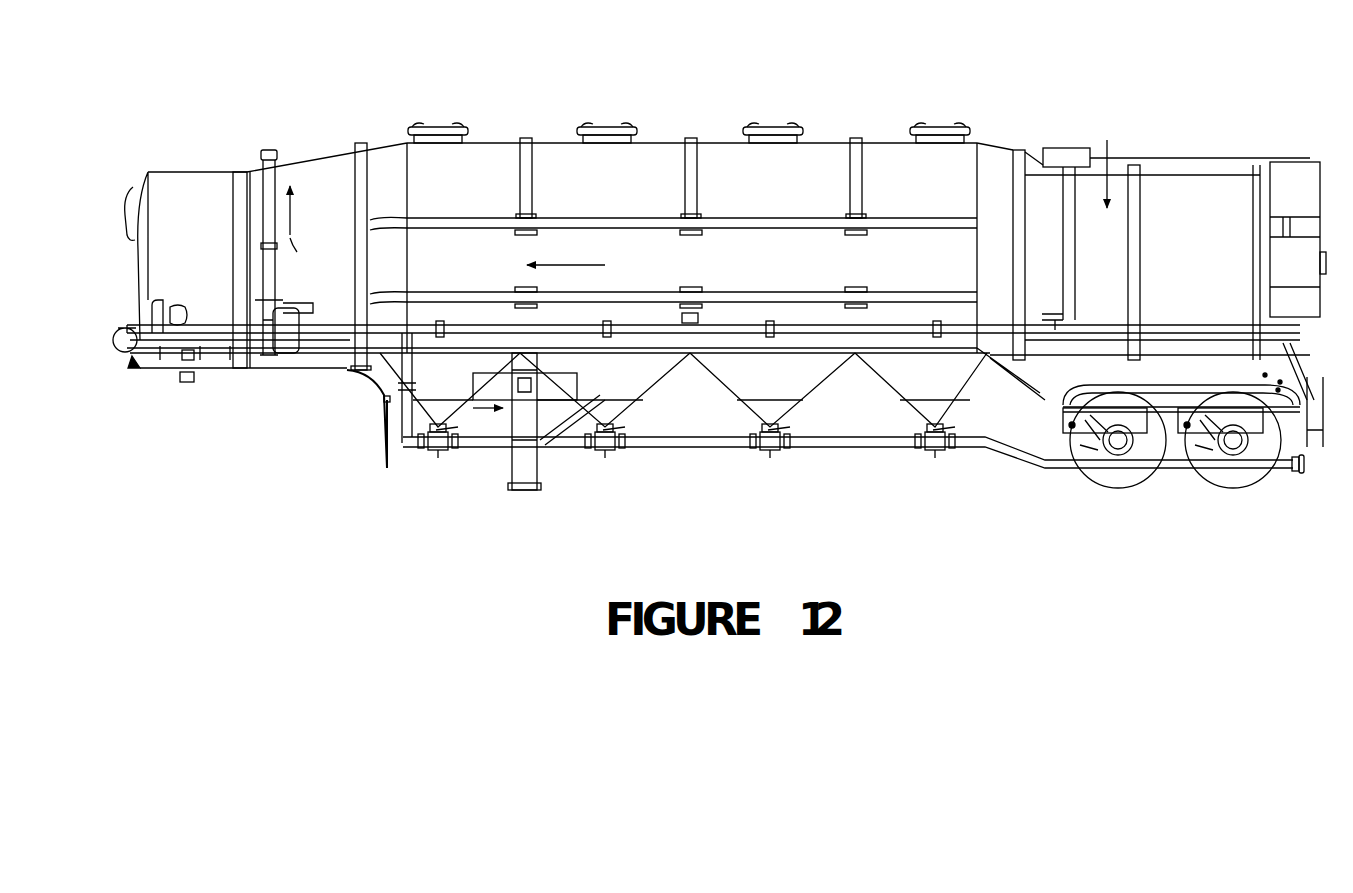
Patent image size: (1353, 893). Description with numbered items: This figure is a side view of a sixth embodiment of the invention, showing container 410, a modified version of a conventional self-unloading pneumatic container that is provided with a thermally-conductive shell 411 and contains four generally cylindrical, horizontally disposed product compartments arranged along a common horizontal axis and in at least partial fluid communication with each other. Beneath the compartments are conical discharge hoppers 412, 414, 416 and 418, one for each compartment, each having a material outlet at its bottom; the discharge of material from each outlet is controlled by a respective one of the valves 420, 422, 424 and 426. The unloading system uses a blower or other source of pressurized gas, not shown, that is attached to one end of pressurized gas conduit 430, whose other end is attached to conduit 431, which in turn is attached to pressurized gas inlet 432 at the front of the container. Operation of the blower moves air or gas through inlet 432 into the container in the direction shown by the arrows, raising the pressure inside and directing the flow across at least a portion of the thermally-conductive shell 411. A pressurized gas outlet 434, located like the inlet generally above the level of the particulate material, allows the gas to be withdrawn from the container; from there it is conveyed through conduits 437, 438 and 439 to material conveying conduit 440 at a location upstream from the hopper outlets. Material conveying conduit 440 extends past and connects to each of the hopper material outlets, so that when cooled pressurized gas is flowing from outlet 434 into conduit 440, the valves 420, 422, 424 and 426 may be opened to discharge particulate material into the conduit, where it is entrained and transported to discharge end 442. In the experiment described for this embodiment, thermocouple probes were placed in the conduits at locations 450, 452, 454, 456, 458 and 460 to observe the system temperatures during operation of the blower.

The container 410 is at (650, 158).
The thermally-conductive shell 411 is at (824, 138).
The conical discharge hopper 412 is at (466, 381).
The conical discharge hopper 414 is at (645, 381).
The conical discharge hopper 416 is at (789, 381).
The conical discharge hopper 418 is at (952, 381).
The valve 420 is at (432, 449).
The valve 422 is at (600, 449).
The valve 424 is at (768, 449).
The valve 426 is at (935, 449).
The pressurized gas conduit 430 is at (168, 353).
The conduit 431 is at (271, 267).
The pressurized gas inlet 432 is at (284, 143).
The pressurized gas outlet 434 is at (1080, 146).
The conduit 437 is at (1068, 258).
The conduit 438 is at (580, 328).
The conduit 439 is at (400, 420).
The material conveying conduit 440 is at (683, 447).
The discharge end 442 is at (1307, 472).
The thermocouple probe location 450 is at (132, 370).
The thermocouple probe location 452 is at (268, 146).
The thermocouple probe location 454 is at (1048, 147).
The thermocouple probe location 456 is at (741, 322).
The thermocouple probe location 458 is at (469, 322).
The thermocouple probe location 460 is at (1278, 474).